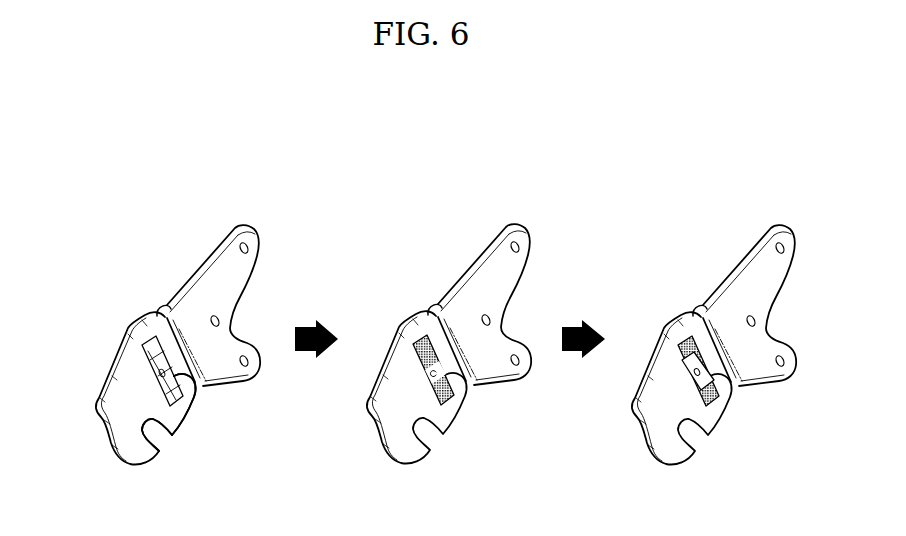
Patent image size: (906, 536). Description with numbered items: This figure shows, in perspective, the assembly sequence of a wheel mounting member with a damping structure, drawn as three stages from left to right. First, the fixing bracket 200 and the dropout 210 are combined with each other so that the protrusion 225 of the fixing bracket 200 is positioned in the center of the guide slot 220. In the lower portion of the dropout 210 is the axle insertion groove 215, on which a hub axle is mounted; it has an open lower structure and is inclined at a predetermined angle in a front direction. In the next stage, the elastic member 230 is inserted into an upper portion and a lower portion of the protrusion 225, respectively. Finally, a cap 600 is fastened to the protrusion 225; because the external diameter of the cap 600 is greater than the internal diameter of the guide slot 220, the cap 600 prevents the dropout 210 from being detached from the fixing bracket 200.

The fixing bracket 200 is at (227, 265).
The dropout 210 is at (128, 387).
The axle insertion groove 215 is at (154, 435).
The guide slot 220 is at (196, 393).
The protrusion 225 is at (156, 345).
The elastic member 230 is at (451, 396).
The cap 600 is at (700, 405).